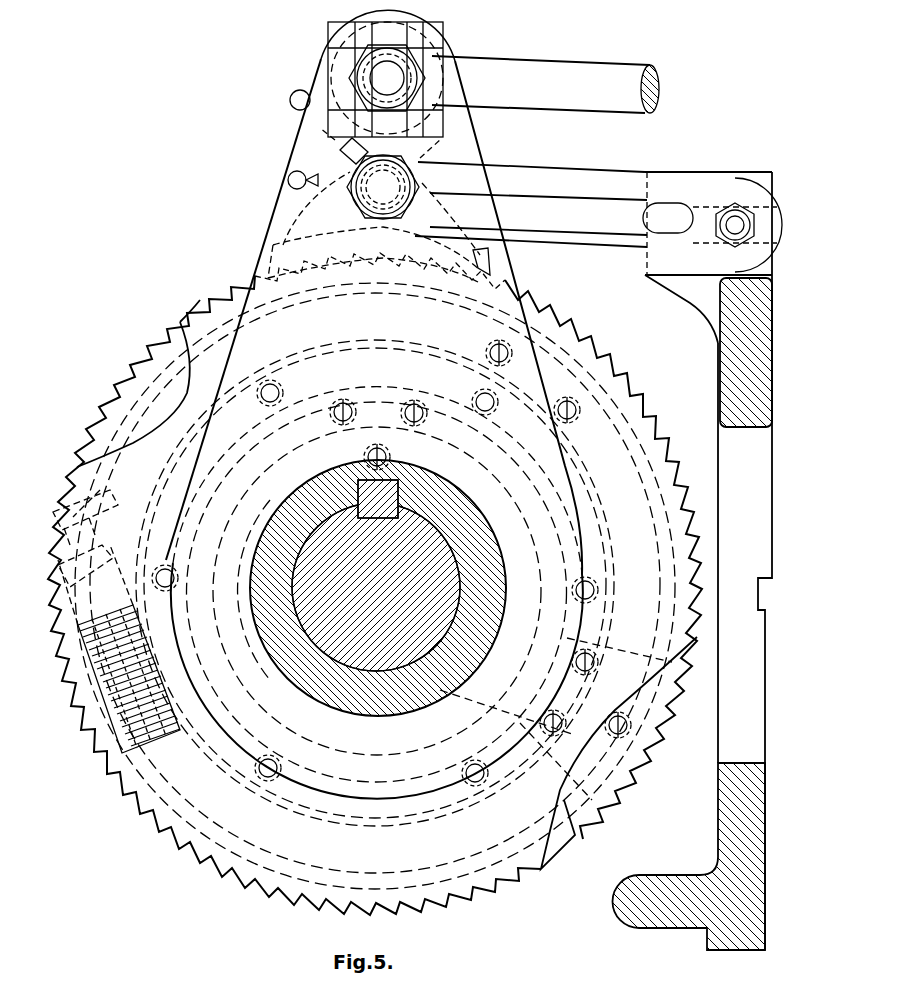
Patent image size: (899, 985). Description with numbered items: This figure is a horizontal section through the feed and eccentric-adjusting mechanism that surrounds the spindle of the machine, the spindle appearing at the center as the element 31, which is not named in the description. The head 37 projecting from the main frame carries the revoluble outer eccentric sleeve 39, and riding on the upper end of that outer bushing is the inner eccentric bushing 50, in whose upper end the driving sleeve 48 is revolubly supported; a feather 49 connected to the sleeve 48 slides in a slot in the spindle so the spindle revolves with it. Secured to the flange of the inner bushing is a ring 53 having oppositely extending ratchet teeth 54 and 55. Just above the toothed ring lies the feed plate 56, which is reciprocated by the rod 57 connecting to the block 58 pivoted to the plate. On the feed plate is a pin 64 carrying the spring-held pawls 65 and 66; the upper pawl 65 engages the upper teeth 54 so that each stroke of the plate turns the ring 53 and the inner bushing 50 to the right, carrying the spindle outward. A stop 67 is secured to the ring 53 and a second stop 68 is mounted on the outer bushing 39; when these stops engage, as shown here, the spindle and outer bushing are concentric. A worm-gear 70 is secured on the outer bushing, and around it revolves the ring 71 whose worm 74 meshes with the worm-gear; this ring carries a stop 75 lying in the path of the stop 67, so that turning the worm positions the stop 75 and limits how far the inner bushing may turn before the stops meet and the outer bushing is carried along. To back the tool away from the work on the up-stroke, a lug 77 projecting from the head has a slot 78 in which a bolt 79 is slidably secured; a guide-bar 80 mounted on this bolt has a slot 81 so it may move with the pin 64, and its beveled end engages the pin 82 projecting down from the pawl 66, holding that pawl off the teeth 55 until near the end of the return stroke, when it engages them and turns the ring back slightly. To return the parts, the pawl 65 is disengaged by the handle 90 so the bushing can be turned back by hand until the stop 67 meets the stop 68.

The shaft 31 is at (320, 546).
The head 37 is at (735, 360).
The outer eccentric sleeve 39 is at (568, 345).
The driving sleeve 48 is at (262, 592).
The feather 49 is at (400, 498).
The inner eccentric bushing 50 is at (275, 850).
The ring 53 is at (375, 583).
The ratchet teeth 54 is at (320, 905).
The ratchet teeth 55 is at (580, 820).
The feed plate 56 is at (305, 143).
The rod 57 is at (545, 84).
The block 58 is at (340, 33).
The pin 64 is at (395, 182).
The pawl 65 is at (497, 257).
The pawl 66 is at (270, 250).
The stop 67 is at (585, 412).
The stop 68 is at (222, 286).
The worm-gear 70 is at (275, 780).
The ring 71 is at (440, 895).
The worm 74 is at (115, 750).
The stop 75 is at (640, 690).
The lug 77 is at (688, 268).
The slot 78 is at (663, 220).
The bolt 79 is at (735, 213).
The guide-bar 80 is at (600, 217).
The slot 81 is at (531, 220).
The pin 82 is at (288, 180).
The handle 90 is at (290, 100).